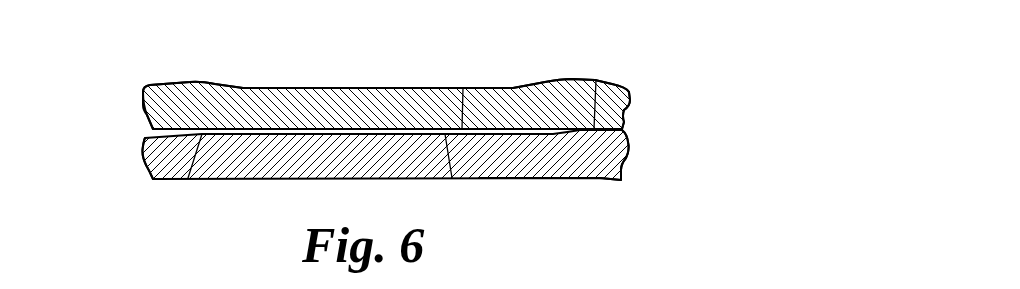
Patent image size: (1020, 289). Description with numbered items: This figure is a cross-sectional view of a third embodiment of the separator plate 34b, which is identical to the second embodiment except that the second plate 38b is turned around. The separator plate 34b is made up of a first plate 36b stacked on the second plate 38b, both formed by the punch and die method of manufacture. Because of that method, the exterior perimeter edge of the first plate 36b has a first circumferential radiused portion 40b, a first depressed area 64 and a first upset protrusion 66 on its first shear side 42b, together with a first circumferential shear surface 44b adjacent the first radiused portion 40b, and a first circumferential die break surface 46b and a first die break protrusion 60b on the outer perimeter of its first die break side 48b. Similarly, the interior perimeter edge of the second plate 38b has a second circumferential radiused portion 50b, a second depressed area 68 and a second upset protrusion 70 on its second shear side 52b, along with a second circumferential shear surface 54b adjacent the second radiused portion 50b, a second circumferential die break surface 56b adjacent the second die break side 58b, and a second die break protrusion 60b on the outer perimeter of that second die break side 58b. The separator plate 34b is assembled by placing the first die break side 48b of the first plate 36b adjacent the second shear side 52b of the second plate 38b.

The separator plate 34b is at (383, 130).
The first plate 36b is at (362, 87).
The second plate 38b is at (263, 163).
The first shear side 42b is at (222, 84).
The first die break side 48b is at (463, 88).
The first upset protrusion 66 is at (568, 79).
The die break protrusion 60b is at (592, 81).
The first depressed area 64 is at (611, 83).
The first circumferential radiused portion 40b is at (631, 90).
The first circumferential shear surface 44b is at (632, 100).
The first circumferential die break surface 46b is at (624, 126).
The second circumferential shear surface 54b is at (632, 152).
The second die break side 58b is at (532, 178).
The second shear side 52b is at (452, 178).
The second upset protrusion 70 is at (188, 178).
The second depressed area 68 is at (147, 133).
The second circumferential radiused portion 50b is at (147, 138).
The second circumferential die break surface 56b is at (149, 177).